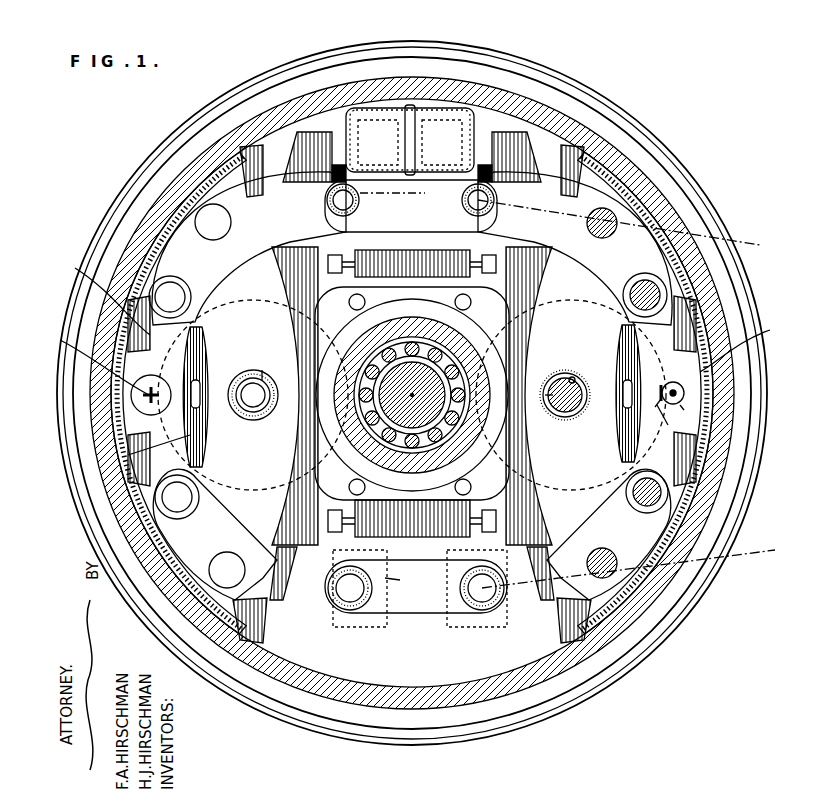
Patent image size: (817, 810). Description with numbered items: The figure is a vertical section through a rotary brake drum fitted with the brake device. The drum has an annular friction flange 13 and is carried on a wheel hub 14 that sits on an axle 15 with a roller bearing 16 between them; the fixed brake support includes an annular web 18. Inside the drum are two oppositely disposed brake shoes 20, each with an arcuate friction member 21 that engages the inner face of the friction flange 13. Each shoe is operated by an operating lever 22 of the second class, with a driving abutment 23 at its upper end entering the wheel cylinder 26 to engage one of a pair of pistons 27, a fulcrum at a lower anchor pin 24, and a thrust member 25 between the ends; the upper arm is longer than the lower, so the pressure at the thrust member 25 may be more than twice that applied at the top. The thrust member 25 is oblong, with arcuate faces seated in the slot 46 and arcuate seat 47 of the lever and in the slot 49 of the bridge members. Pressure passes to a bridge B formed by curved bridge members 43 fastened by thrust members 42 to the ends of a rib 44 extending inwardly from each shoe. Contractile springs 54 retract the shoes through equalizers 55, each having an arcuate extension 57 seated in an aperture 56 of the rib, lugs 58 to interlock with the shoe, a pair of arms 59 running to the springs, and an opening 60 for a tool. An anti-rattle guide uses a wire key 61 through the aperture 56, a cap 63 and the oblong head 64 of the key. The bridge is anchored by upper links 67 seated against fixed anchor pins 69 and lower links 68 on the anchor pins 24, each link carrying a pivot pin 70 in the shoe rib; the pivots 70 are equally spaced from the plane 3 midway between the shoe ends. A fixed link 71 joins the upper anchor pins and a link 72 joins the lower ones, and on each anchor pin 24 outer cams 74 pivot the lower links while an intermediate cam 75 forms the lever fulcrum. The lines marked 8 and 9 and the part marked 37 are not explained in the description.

The plane 3 is at (795, 393).
The anchor pin axis 8 is at (603, 567).
The pivot axis 9 is at (566, 219).
The annular friction flange 13 is at (555, 100).
The wheel hub 14 is at (360, 336).
The axle 15 is at (372, 396).
The roller bearing 16 is at (380, 362).
The annular web 18 is at (470, 670).
The brake shoe 20 is at (210, 165).
The arcuate friction member 21 is at (200, 182).
The operating lever 22 is at (262, 175).
The driving abutment 23 is at (320, 132).
The anchor pin 24 is at (355, 600).
The thrust member 25 is at (409, 407).
The wheel cylinder 26 is at (375, 172).
The piston 27 is at (440, 120).
The anchor block cover 37 is at (455, 110).
The thrust member 42 is at (705, 628).
The bridge member 43 is at (268, 292).
The rib 44 is at (552, 622).
The slot 46 is at (574, 364).
The arcuate seat 47 is at (542, 376).
The slot 49 is at (568, 432).
The contractile spring 54 is at (410, 250).
The equalizer 55 is at (770, 470).
The aperture 56 is at (409, 434).
The arcuate extension 57 is at (675, 381).
The lug 58 is at (654, 417).
The arm 59 is at (412, 400).
The opening 60 is at (193, 410).
The wire key 61 is at (691, 410).
The cap 63 is at (148, 387).
The oblong head 64 is at (93, 359).
The upper link 67 is at (412, 248).
The lower link 68 is at (165, 540).
The fixed anchor pin 69 is at (465, 210).
The pivot pin 70 is at (765, 288).
The fixed link 71 is at (411, 206).
The link 72 is at (413, 605).
The cam 74 is at (460, 562).
The cam 75 is at (399, 577).
The bridge B is at (409, 357).